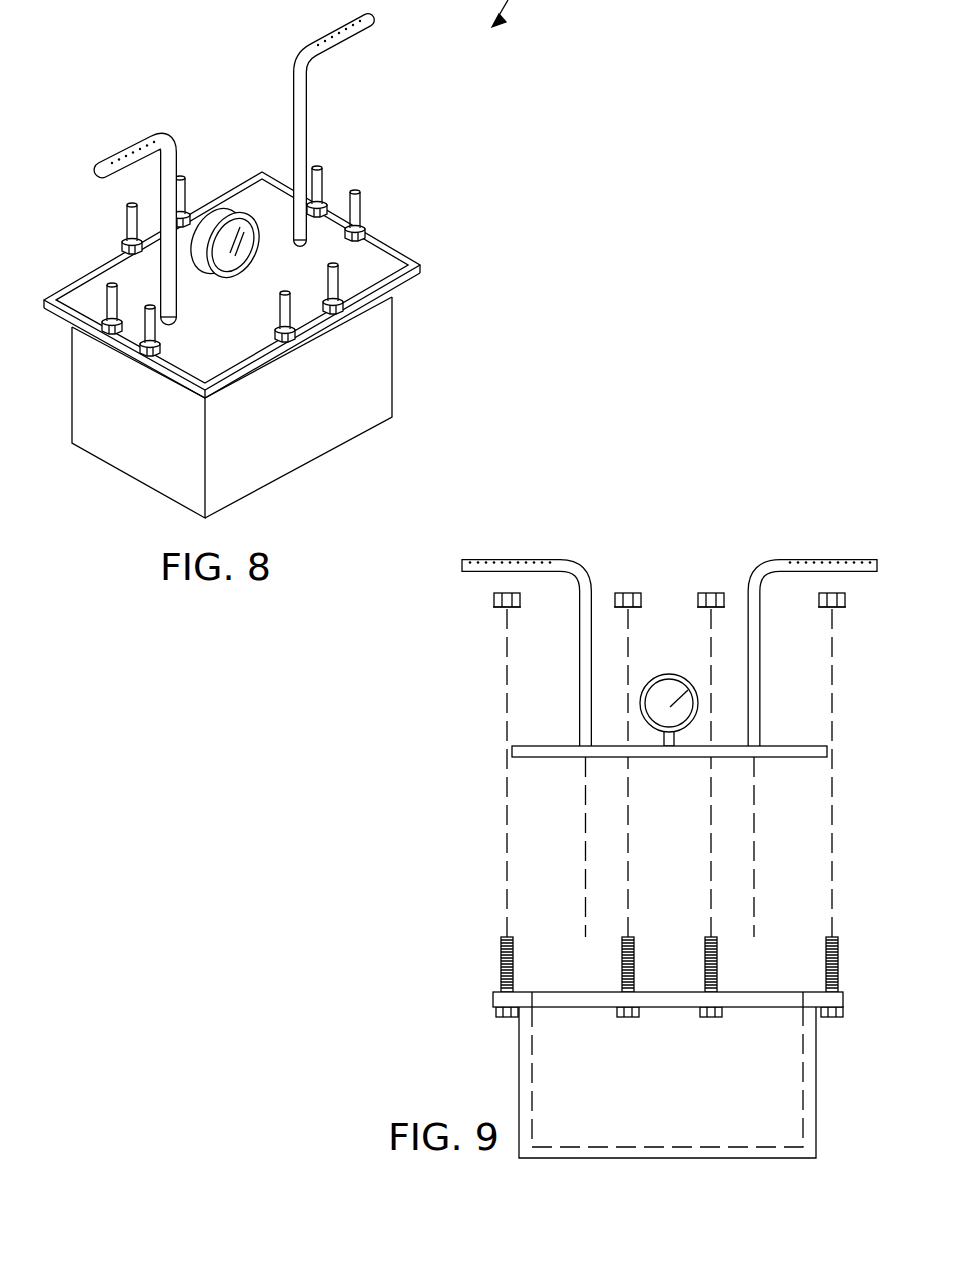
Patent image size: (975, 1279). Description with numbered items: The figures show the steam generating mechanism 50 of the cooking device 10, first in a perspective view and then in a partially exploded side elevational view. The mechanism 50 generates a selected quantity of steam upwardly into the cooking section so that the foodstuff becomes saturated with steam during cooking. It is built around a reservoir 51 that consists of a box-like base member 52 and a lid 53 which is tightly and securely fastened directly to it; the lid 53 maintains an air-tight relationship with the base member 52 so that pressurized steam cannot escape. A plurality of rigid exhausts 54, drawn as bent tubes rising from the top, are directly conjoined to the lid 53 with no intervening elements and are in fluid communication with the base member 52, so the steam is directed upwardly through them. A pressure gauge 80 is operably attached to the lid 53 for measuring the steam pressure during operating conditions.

In FIG. 8, the device 10 is at (794, 284).
In FIG. 8, the steam generating mechanism 50 is at (432, 281).
In FIG. 9, the steam generating mechanism 50 is at (667, 490).
In FIG. 8, the reservoir 51 is at (333, 417).
In FIG. 8, the base member 52 is at (353, 358).
In FIG. 9, the base member 52 is at (552, 1060).
In FIG. 8, the lid 53 is at (410, 258).
In FIG. 9, the lid 53 is at (530, 746).
In FIG. 8, the rigid exhausts 54 is at (163, 167).
In FIG. 9, the rigid exhausts 54 is at (578, 566).
In FIG. 8, the pressure gauge 80 is at (215, 220).
In FIG. 9, the pressure gauge 80 is at (662, 676).